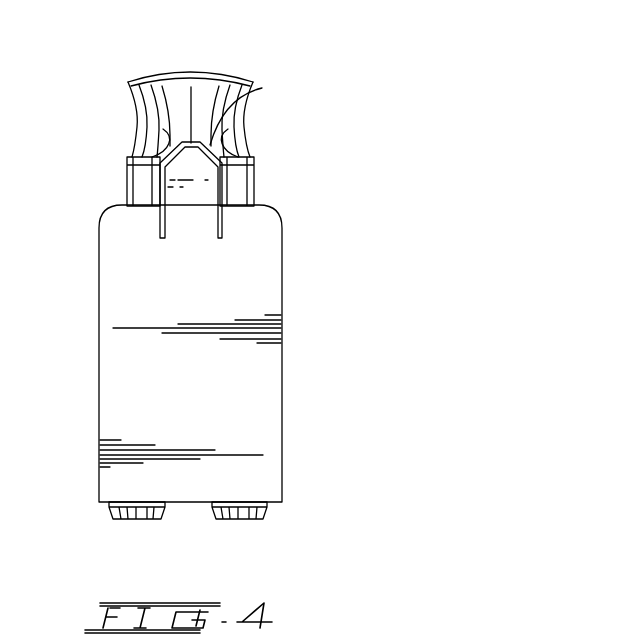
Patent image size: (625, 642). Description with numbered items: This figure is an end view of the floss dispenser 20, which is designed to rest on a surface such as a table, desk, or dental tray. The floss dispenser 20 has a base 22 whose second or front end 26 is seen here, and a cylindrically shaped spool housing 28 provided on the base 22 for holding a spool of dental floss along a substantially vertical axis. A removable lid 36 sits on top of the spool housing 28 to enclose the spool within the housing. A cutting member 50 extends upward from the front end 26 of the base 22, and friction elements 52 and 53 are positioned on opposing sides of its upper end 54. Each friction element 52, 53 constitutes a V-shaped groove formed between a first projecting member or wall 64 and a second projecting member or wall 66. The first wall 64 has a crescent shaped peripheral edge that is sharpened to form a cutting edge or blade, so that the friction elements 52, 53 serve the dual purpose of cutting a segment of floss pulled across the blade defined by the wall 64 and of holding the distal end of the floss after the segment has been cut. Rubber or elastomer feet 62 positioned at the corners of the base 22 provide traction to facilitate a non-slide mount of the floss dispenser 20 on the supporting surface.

The floss dispenser 20 is at (398, 293).
The base 22 is at (283, 430).
The second or front end 26 is at (123, 395).
The spool housing 28 is at (243, 195).
The removable lid 36 is at (207, 97).
The cutting member 50 is at (263, 290).
The friction element 52 is at (227, 156).
The friction element 53 is at (153, 156).
The upper end 54 is at (188, 203).
The feet 62 is at (143, 510).
The first projecting member or wall 64 is at (163, 129).
The second projecting member or wall 66 is at (173, 143).